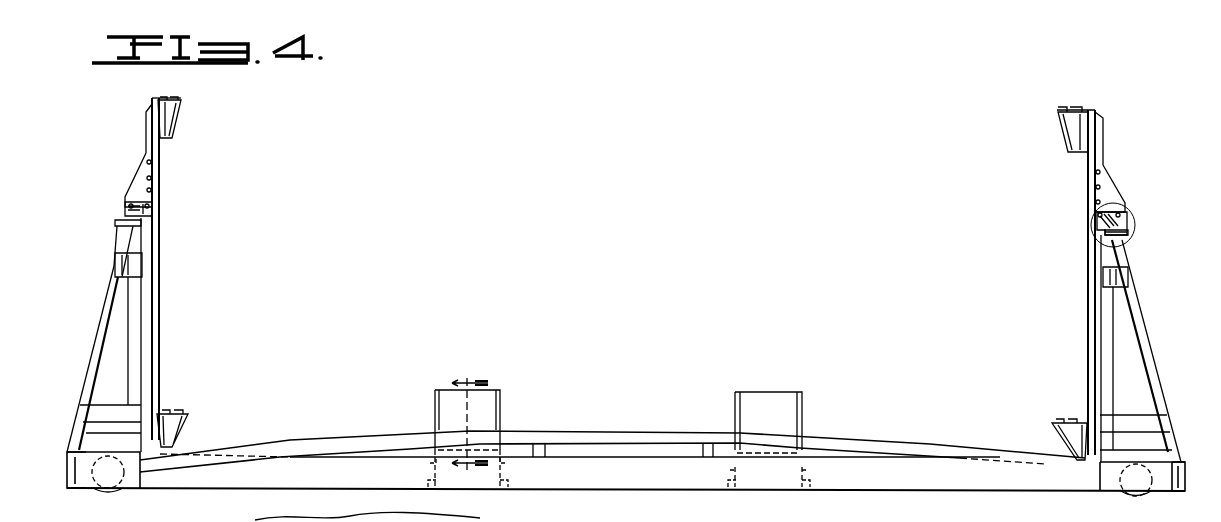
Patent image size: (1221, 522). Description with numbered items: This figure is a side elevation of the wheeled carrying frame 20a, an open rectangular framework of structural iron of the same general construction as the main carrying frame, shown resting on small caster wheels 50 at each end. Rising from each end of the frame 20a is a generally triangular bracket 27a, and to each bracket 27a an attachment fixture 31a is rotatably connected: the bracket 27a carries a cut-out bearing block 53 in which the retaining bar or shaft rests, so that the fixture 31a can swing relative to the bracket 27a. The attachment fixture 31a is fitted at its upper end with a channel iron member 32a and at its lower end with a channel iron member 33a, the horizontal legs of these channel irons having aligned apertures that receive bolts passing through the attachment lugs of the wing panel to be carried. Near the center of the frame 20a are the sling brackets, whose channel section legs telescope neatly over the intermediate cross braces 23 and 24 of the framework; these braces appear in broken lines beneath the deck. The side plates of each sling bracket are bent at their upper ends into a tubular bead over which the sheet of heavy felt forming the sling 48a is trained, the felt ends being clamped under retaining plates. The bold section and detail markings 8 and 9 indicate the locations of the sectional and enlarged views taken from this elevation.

The frame 20a is at (642, 484).
The caster wheels 50 is at (122, 493).
The attachment fixtures 31a is at (160, 263).
The upper channel iron member 32a is at (178, 140).
The lower channel iron member 33a is at (184, 413).
The brackets 27a is at (1172, 354).
The cut-out bearing block 53 is at (1130, 232).
The sling 48a is at (496, 390).
The intermediate cross brace 23 is at (487, 489).
The intermediate cross brace 24 is at (797, 488).
The section line 8 is at (438, 417).
The detail circle 9 is at (1130, 209).